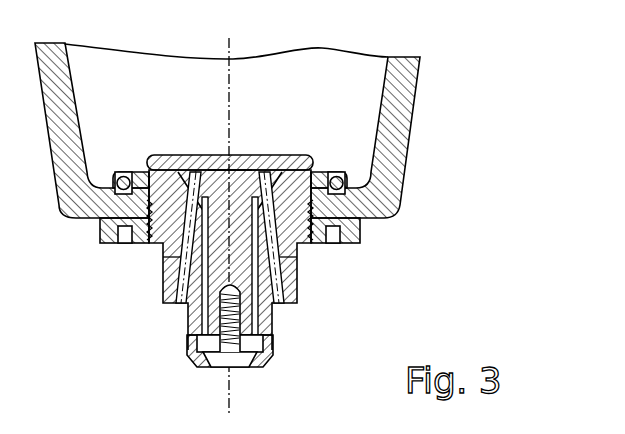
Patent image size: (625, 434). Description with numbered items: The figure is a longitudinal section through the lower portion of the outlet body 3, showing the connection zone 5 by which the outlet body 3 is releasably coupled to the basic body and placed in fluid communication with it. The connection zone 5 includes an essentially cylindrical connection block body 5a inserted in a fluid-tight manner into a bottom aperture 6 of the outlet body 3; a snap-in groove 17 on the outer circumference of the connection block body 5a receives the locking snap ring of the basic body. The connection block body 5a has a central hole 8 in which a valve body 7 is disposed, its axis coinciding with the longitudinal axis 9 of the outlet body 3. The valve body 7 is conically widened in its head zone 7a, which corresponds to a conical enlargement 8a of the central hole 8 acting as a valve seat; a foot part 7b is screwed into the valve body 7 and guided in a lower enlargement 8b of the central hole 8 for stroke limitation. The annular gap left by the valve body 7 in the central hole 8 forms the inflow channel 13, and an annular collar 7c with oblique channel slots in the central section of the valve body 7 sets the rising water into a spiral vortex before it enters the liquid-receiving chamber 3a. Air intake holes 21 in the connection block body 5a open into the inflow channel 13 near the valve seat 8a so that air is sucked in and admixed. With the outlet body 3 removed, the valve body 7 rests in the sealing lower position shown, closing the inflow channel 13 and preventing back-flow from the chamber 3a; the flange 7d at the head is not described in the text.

The outlet body 3 is at (386, 216).
The liquid-receiving chamber 3a is at (372, 80).
The connection zone 5 is at (300, 250).
The connection block body 5a is at (158, 210).
The bottom aperture 6 is at (337, 178).
The valve body 7 is at (218, 282).
The head zone 7a is at (243, 160).
The foot part 7b is at (200, 365).
The annular collar 7c is at (207, 258).
The top flange 7d is at (302, 160).
The central hole 8 is at (256, 310).
The conical enlargement 8a is at (196, 207).
The lower enlargement 8b is at (255, 364).
The longitudinal axis 9 is at (233, 40).
The inflow channel 13 is at (203, 324).
The snap-in groove 17 is at (292, 262).
The air intake holes 21 is at (182, 307).